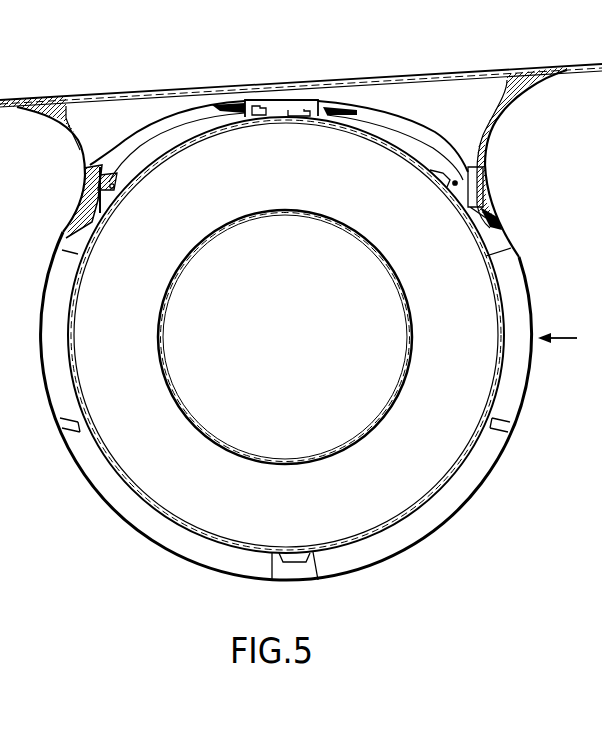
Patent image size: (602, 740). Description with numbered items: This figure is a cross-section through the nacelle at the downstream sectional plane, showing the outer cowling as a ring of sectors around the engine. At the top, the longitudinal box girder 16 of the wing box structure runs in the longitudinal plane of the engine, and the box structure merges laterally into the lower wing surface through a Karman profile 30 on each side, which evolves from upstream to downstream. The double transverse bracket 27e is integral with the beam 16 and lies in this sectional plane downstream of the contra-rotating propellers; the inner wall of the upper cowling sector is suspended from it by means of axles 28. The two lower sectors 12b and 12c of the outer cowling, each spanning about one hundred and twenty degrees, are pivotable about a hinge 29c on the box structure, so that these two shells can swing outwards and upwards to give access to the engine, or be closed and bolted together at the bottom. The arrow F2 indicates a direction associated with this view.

The lower sector 12b is at (115, 488).
The lower sector 12c is at (453, 495).
The longitudinal box girder 16 is at (272, 100).
The double transverse bracket 27e is at (135, 143).
The axle 28 is at (114, 187).
The hinge 29c is at (80, 220).
The Karman profile 30 is at (82, 157).
The force F2 is at (558, 326).